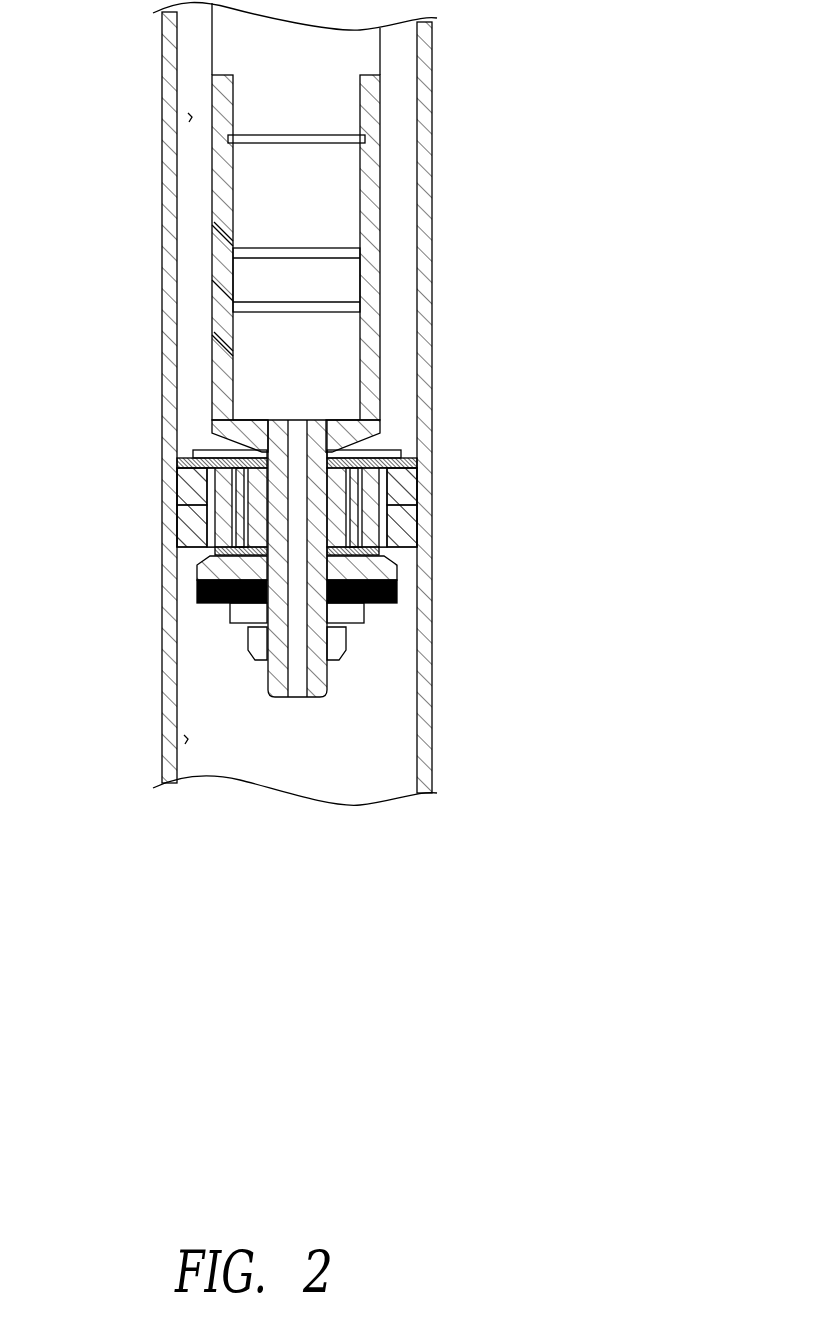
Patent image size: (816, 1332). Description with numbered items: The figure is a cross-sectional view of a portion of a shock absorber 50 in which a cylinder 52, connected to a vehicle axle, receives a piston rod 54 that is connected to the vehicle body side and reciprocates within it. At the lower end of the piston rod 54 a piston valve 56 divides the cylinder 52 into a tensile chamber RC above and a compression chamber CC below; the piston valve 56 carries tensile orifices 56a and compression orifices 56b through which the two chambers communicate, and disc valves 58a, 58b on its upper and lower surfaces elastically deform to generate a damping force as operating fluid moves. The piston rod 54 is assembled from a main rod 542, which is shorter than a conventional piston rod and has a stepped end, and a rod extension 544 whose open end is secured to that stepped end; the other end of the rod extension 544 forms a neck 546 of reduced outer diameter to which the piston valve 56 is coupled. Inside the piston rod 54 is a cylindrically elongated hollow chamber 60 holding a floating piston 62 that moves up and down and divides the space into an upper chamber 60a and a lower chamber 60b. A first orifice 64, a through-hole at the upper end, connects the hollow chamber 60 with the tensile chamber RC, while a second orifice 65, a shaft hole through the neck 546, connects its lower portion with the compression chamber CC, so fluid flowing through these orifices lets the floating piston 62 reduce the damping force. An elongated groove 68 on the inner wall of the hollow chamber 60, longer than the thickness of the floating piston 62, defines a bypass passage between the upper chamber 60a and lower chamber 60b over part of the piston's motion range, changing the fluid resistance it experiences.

The shock absorber 50 is at (458, 50).
The cylinder 52 is at (424, 96).
The piston rod 54 is at (275, 227).
The main rod 542 is at (222, 45).
The rod extension 544 is at (217, 163).
The neck 546 is at (230, 625).
The first orifice 64 is at (372, 141).
The floating piston 62 is at (348, 282).
The hollow chamber 60 is at (78, 230).
The upper chamber 60a is at (250, 235).
The lower chamber 60b is at (250, 345).
The groove 68 is at (233, 285).
The piston valve 56 is at (333, 511).
The tensile orifices 56a is at (401, 532).
The compression orifices 56b is at (404, 504).
The disc valve 58a is at (397, 602).
The disc valve 58b is at (386, 452).
The second orifice 65 is at (327, 683).
The tensile chamber RC is at (192, 117).
The compression chamber CC is at (177, 737).